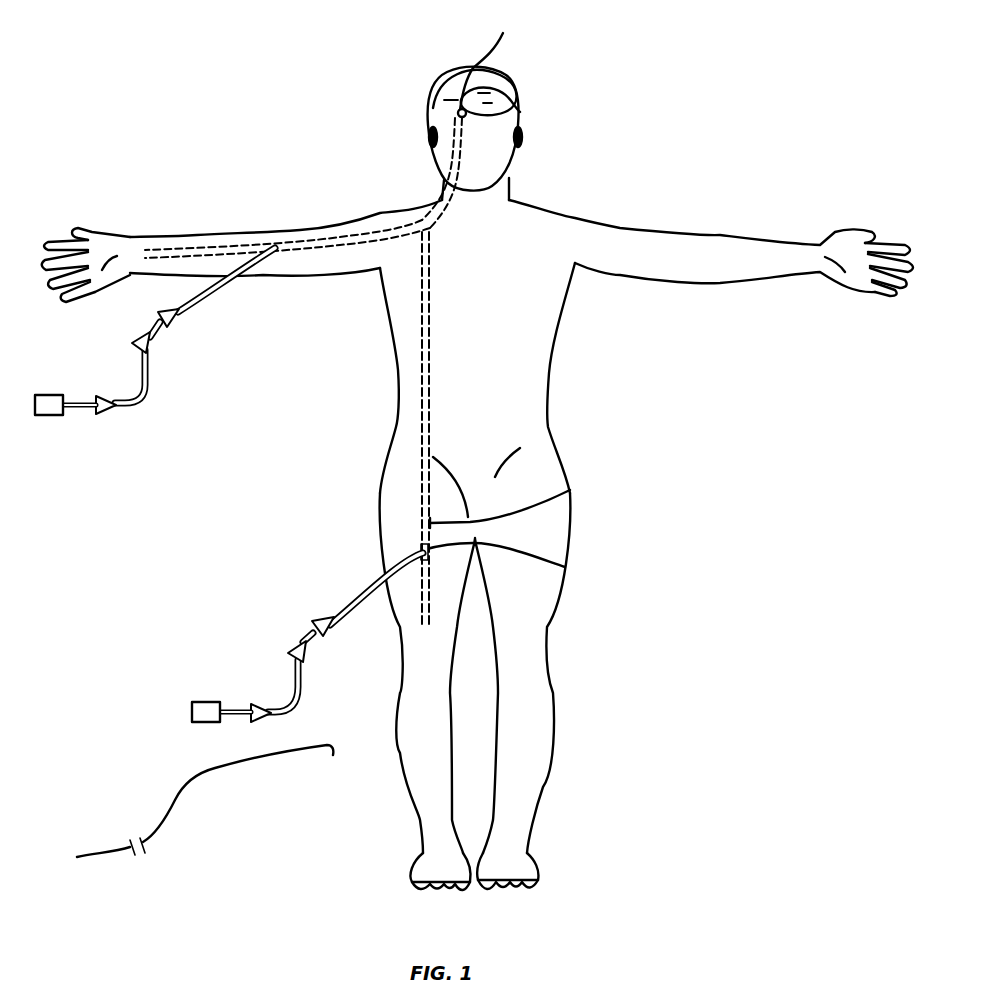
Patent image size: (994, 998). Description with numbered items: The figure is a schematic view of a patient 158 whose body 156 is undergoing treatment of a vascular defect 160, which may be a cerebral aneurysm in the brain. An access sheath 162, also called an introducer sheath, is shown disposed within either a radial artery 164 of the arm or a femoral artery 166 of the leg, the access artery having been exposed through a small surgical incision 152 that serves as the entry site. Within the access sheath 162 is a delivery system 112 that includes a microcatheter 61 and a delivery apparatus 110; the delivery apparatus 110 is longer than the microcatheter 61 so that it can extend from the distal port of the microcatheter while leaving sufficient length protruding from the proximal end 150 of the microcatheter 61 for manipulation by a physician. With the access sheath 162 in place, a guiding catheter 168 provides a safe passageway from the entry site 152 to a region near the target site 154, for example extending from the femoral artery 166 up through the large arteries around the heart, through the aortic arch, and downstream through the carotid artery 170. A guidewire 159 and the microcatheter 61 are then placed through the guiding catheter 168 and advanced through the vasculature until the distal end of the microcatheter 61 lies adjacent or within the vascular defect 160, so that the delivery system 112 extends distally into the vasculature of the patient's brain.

The microcatheter 61 is at (143, 396).
The delivery apparatus 110 is at (72, 408).
The delivery system 112 is at (229, 493).
The proximal end 150 is at (118, 408).
The surgical incision 152 is at (565, 567).
The target site 154 is at (493, 63).
The body 156 is at (548, 376).
The patient 158 is at (477, 478).
The guidewire 159 is at (205, 775).
The vascular defect 160 is at (520, 95).
The access sheath 162 is at (228, 282).
The radial artery 164 is at (318, 228).
The femoral artery 166 is at (570, 490).
The guiding catheter 168 is at (140, 338).
The carotid artery 170 is at (438, 193).